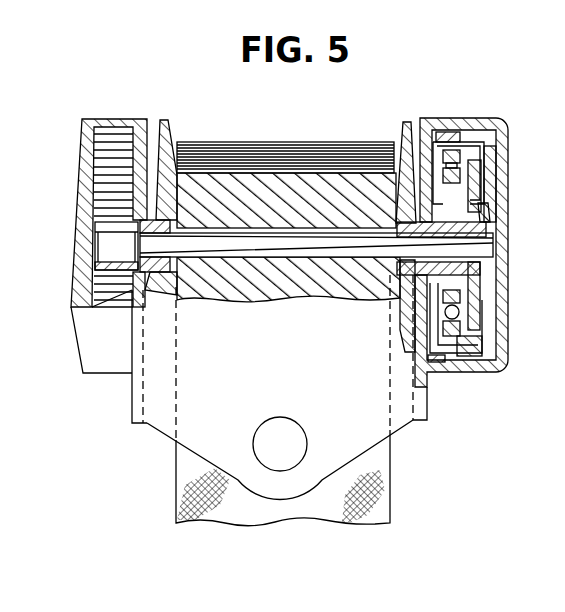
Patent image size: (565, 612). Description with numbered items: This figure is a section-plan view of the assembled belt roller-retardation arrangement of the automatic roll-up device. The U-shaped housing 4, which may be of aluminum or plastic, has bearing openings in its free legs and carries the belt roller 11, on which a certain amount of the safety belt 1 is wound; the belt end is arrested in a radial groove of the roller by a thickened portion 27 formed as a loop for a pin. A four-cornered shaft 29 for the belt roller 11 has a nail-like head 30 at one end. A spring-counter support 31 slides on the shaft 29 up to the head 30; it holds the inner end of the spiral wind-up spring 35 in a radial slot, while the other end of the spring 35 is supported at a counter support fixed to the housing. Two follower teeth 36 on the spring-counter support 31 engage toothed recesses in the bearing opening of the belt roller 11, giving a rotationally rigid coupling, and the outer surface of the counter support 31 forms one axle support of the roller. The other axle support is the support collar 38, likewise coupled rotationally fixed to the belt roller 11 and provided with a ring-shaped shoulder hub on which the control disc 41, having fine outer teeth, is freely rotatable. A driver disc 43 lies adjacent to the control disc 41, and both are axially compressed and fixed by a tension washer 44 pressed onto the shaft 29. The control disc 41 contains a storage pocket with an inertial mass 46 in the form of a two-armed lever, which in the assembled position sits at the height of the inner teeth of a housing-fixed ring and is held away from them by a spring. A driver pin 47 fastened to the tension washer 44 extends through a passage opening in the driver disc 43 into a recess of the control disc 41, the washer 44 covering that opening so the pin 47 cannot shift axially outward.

The safety belt 1 is at (378, 519).
The U-shaped housing 4 is at (155, 424).
The belt roller 11 is at (168, 136).
The thickened portion 27 is at (276, 158).
The four-cornered shaft 29 is at (353, 240).
The head 30 is at (142, 250).
The spring-counter support 31 is at (146, 222).
The spiral wind-up spring 35 is at (110, 136).
The follower teeth 36 is at (181, 289).
The support collar 38 is at (398, 282).
The control disc 41 is at (483, 199).
The driver disc 43 is at (486, 167).
The tension washer 44 is at (489, 226).
The inertial mass 46 is at (440, 133).
The driver pin 47 is at (468, 175).